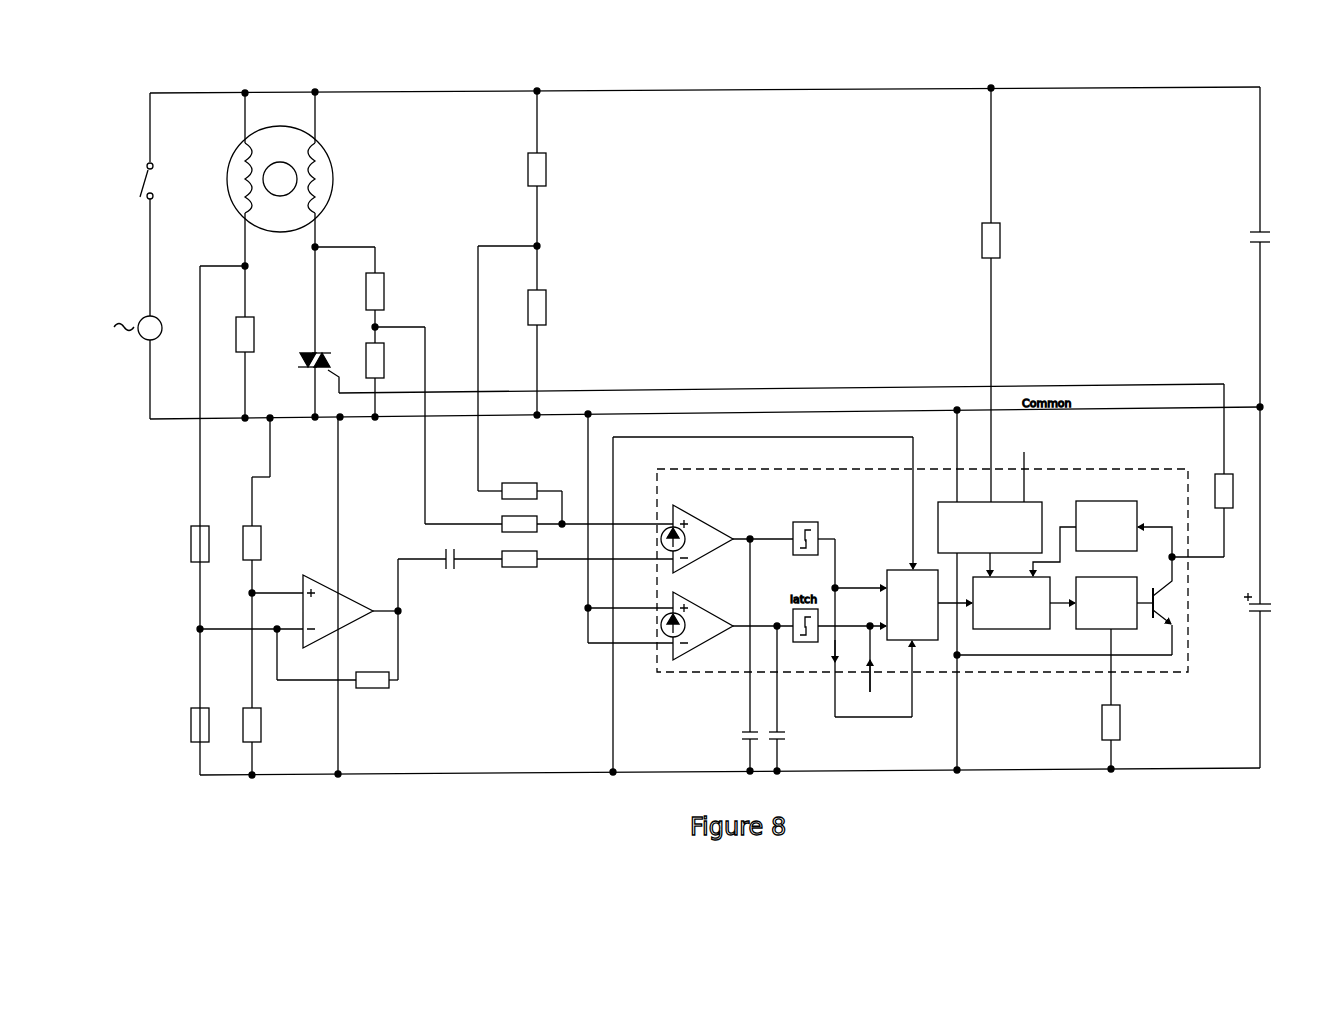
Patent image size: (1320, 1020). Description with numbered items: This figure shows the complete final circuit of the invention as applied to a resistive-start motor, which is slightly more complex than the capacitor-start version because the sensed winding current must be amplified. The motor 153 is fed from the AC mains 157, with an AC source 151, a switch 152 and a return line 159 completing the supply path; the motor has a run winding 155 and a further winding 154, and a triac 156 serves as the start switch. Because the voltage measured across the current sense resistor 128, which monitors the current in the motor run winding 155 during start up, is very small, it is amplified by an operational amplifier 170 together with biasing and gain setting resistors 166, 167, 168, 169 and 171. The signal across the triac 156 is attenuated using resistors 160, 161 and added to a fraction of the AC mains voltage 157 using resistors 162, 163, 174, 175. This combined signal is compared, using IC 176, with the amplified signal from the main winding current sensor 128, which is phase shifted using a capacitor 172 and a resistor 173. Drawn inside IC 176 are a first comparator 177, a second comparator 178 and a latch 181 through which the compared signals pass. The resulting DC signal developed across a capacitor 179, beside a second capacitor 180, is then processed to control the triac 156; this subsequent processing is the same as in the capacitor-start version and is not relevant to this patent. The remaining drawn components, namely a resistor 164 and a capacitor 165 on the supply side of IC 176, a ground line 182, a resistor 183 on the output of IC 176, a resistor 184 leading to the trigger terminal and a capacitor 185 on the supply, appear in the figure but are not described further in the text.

The AC power source 151 is at (146, 338).
The switch 152 is at (144, 180).
The motor 153 is at (288, 117).
The motor winding 154 is at (318, 172).
The motor run winding 155 is at (239, 153).
The triac (start switch) 156 is at (311, 349).
The AC mains voltage 157 is at (440, 92).
The return line 159 is at (167, 420).
The current sense resistor 128 is at (248, 316).
The resistor 160 is at (383, 289).
The resistor 161 is at (383, 366).
The resistor 162 is at (546, 164).
The resistor 163 is at (546, 300).
The resistor 164 is at (1001, 240).
The capacitor 165 is at (1268, 232).
The biasing and gain setting resistor 166 is at (191, 545).
The biasing and gain setting resistor 167 is at (191, 720).
The biasing and gain setting resistor 168 is at (262, 546).
The biasing and gain setting resistor 169 is at (262, 730).
The operational amplifier 170 is at (346, 593).
The biasing and gain setting resistor 171 is at (372, 689).
The phase shifting component 172 is at (450, 571).
The phase shifting component 173 is at (520, 570).
The resistor 174 is at (500, 518).
The resistor 175 is at (516, 483).
The IC 176 is at (700, 470).
The comparator 177 is at (720, 571).
The comparator 178 is at (704, 646).
The capacitor 179 is at (740, 734).
The capacitor 180 is at (786, 734).
The latch 181 is at (818, 531).
The ground line 182 is at (463, 776).
The resistor 183 is at (1102, 718).
The resistor 184 is at (1217, 472).
The capacitor 185 is at (1264, 603).